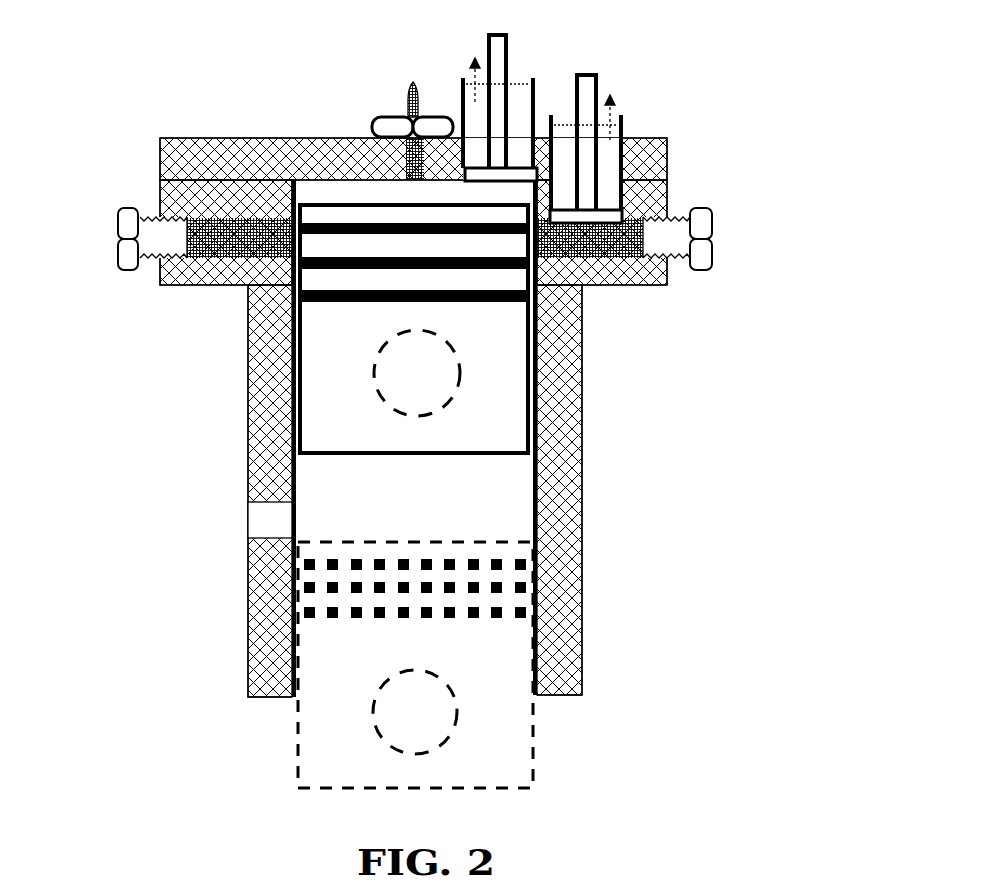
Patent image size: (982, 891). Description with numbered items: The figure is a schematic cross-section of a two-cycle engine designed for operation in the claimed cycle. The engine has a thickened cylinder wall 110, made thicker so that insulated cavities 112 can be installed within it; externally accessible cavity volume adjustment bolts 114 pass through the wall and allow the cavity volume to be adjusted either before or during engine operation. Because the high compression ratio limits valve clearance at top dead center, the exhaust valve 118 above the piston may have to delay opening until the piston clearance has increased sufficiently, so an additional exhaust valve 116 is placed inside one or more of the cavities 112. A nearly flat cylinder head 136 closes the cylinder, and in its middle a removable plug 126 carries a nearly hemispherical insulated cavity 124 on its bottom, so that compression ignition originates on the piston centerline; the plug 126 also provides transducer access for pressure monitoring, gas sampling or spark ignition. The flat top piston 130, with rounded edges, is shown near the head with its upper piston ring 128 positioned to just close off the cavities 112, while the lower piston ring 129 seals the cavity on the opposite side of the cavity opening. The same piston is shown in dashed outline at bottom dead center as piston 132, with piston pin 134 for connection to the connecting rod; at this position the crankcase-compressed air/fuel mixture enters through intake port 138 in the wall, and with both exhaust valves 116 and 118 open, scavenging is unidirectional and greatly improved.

The thickened cylinder wall 110 is at (442, 438).
The insulated cavities 112 is at (668, 207).
The cavity volume adjustment bolts 114 is at (128, 207).
The additional exhaust valve 116 is at (668, 165).
The exhaust valve 118 is at (510, 140).
The hemispherical insulated cavity 124 is at (368, 137).
The removable plug 126 is at (425, 83).
The upper piston ring 128 is at (583, 282).
The lower piston ring 129 is at (482, 303).
The flat top piston 130 is at (580, 413).
The piston at bottom dead center 132 is at (535, 708).
The piston pin 134 is at (460, 715).
The cylinder head 136 is at (658, 142).
The intake port 138 is at (273, 520).